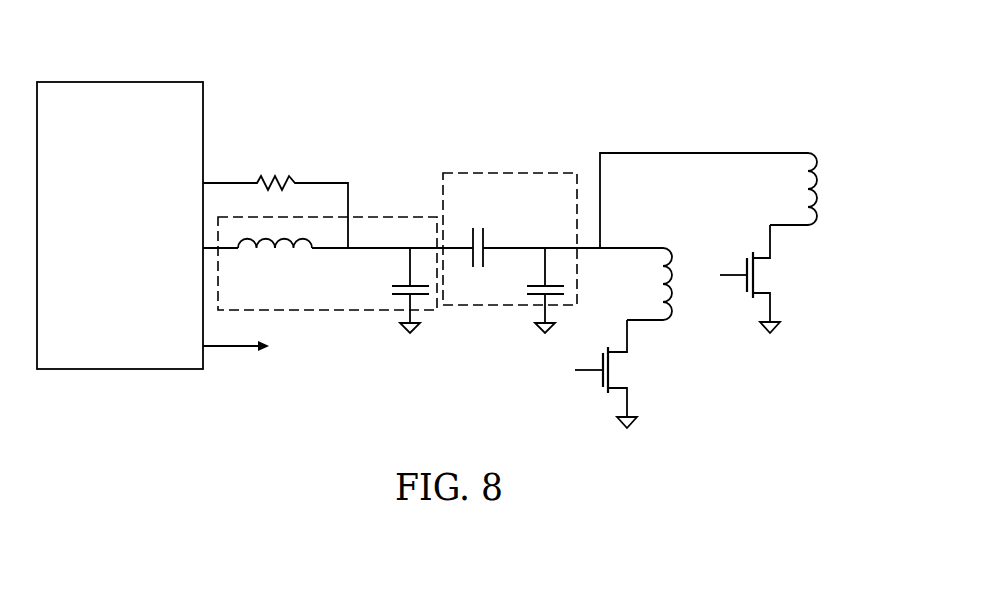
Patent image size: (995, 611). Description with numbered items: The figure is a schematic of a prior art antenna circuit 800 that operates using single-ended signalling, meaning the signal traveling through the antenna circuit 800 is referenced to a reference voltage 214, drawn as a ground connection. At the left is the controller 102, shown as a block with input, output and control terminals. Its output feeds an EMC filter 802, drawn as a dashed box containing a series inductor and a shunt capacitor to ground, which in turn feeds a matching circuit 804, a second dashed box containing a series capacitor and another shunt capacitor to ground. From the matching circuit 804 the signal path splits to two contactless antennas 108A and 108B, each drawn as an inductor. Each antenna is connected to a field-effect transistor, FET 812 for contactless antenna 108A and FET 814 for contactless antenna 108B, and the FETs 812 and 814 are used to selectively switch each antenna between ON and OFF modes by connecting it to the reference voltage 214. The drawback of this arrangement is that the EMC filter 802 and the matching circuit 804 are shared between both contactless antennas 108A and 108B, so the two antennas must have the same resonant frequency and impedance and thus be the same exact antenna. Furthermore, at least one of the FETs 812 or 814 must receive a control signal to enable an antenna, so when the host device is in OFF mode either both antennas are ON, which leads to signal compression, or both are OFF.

The antenna circuit 800 is at (686, 54).
The controller 102 is at (160, 82).
The EMC filter 802 is at (375, 217).
The matching circuit 804 is at (528, 177).
The contactless antenna 108A is at (665, 322).
The contactless antenna 108B is at (812, 227).
The FET 812 is at (602, 362).
The FET 814 is at (746, 266).
The reference voltage 214 is at (618, 420).